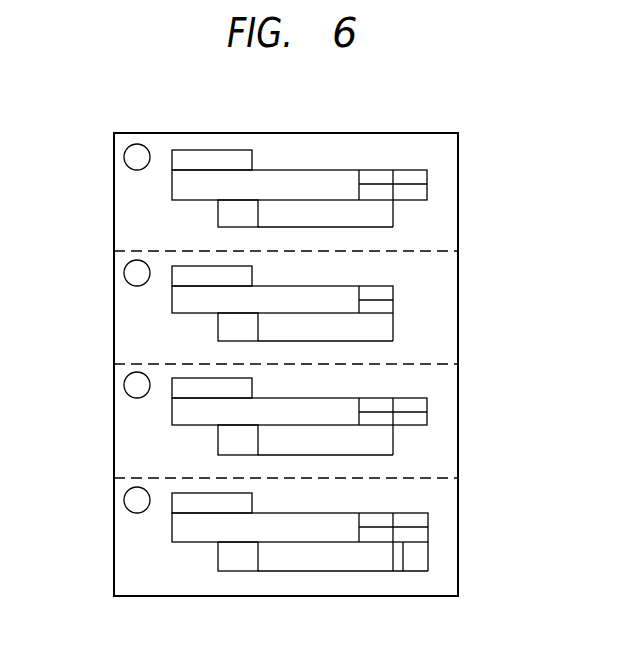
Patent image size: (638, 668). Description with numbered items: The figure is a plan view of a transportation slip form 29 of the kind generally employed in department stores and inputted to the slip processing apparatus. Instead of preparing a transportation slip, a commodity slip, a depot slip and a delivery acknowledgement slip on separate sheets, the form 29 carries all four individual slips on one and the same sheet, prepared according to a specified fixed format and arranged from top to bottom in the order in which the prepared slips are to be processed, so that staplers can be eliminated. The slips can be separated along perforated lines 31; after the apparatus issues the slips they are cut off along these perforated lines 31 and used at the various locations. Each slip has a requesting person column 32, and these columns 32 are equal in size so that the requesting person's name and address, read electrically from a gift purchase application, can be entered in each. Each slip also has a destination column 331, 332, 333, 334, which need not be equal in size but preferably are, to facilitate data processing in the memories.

The transportation slip form 29 is at (433, 133).
The perforated lines 31 is at (125, 251).
The requesting person columns 32 is at (385, 216).
The destination column 331 is at (305, 185).
The destination column 332 is at (178, 297).
The destination column 333 is at (178, 412).
The destination column 334 is at (200, 533).